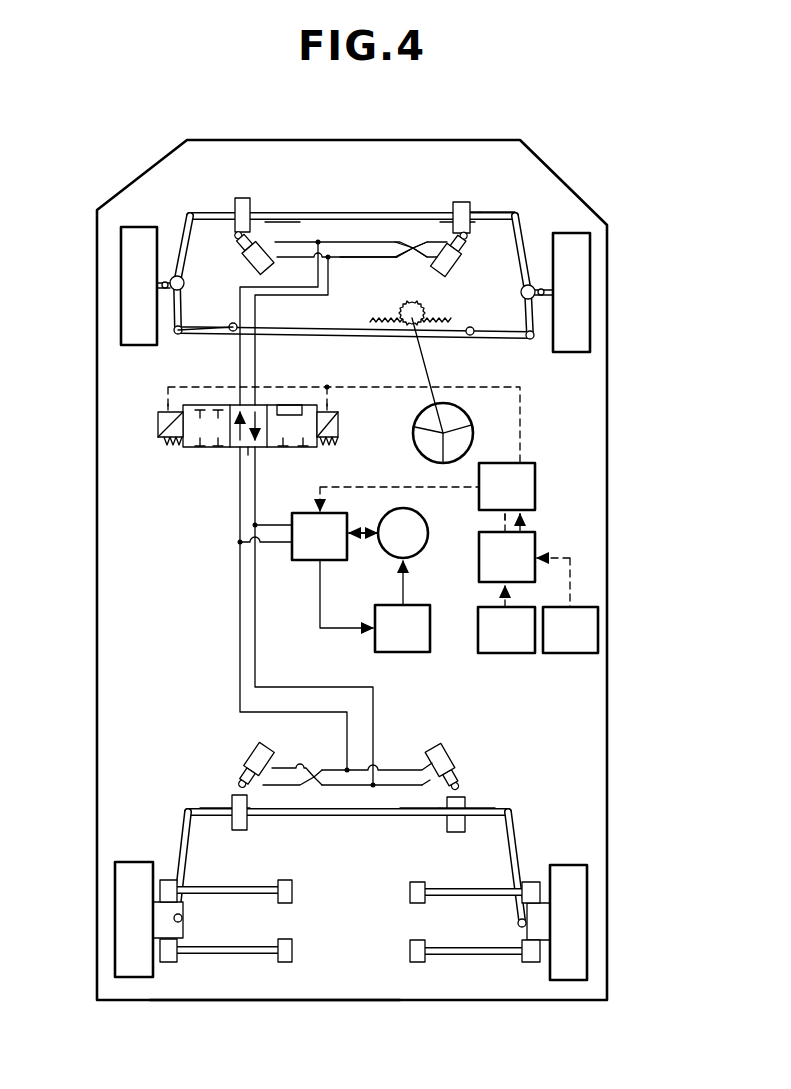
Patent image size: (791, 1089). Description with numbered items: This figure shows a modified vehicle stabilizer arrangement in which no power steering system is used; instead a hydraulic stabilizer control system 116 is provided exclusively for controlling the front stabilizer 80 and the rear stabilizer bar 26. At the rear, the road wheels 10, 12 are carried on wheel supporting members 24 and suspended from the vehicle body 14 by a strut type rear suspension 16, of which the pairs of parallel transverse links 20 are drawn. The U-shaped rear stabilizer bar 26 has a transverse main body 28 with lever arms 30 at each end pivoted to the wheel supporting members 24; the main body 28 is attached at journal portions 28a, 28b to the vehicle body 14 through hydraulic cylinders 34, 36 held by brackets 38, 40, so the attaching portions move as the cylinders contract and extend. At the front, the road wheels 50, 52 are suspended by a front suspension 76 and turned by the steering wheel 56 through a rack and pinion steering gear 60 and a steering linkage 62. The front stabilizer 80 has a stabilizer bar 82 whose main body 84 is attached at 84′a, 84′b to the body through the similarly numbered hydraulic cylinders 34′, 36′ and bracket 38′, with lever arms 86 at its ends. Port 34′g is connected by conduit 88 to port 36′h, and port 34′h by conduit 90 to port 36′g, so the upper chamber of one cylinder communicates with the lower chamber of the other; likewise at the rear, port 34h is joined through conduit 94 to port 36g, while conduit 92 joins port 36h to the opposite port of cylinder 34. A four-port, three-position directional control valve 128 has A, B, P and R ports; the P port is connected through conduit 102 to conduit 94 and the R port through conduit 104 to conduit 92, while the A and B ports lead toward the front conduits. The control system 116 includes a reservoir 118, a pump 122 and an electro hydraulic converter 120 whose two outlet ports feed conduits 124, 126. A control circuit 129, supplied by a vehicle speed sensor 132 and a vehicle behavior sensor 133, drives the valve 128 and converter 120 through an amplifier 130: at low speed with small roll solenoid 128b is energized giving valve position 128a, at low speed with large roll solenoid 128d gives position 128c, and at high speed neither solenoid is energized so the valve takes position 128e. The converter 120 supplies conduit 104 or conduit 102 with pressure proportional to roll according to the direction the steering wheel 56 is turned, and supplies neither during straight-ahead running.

The rear road wheel 10 is at (125, 862).
The rear road wheel 12 is at (575, 865).
The vehicle body 14 is at (96, 549).
The strut type rear suspension 16 is at (207, 1006).
The parallel transverse links 20 is at (266, 894).
The wheel supporting member 24 is at (180, 932).
The stabilizer bar 26 is at (518, 815).
The main body 28 is at (359, 845).
The attaching portion 28a is at (226, 808).
The attaching portion 28b is at (470, 808).
The lever arms 30 is at (186, 840).
The hydraulic cylinder 34 is at (250, 745).
The port 34h is at (280, 766).
The hydraulic cylinder 36 is at (455, 750).
The port 36h is at (420, 765).
The port 36g is at (430, 786).
The left rear bracket 38 is at (240, 830).
The right bracket 40 is at (460, 202).
The front road wheel 50 is at (140, 227).
The front road wheel 52 is at (570, 352).
The steering wheel 56 is at (472, 420).
The rack and pinion steering gear 60 is at (424, 331).
The steering linkage 62 is at (190, 336).
The front suspension 76 is at (357, 484).
The front stabilizer 80 is at (484, 193).
The stabilizer bar 82 is at (504, 212).
The main body 84 is at (365, 214).
The attaching portion 84′a is at (272, 218).
The attaching portion 84′b is at (466, 222).
The lever arms 86 is at (192, 222).
The conduit 88 is at (370, 258).
The conduit 90 is at (380, 240).
The conduit 92 is at (334, 788).
The conduit 94 is at (328, 770).
The conduit 102 is at (239, 592).
The conduit 104 is at (256, 641).
The hydraulic stabilizer control system 116 is at (569, 572).
The reservoir 118 is at (415, 652).
The electro hydraulic converter 120 is at (310, 513).
The pump 122 is at (400, 509).
The conduit 124 is at (274, 524).
The conduit 126 is at (272, 543).
The directional control valve 128 is at (310, 381).
The valve position 128a is at (312, 386).
The solenoid 128b is at (339, 420).
The valve position 128c is at (232, 405).
The solenoid 128d is at (160, 420).
The valve position 128e is at (248, 449).
The control circuit 129 is at (537, 545).
The amplifier 130 is at (536, 475).
The vehicle speed sensor 132 is at (575, 653).
The vehicle behavior sensor 133 is at (512, 653).
The hydraulic cylinder 34′ is at (247, 262).
The port 34′h is at (272, 240).
The port 34′g is at (285, 264).
The hydraulic cylinder 36′ is at (458, 272).
The port 36′h is at (444, 240).
The port 36′g is at (432, 270).
The left front bracket 38′ is at (241, 198).
The A port A is at (240, 404).
The B port B is at (257, 404).
The P port P is at (240, 448).
The R port R is at (256, 448).